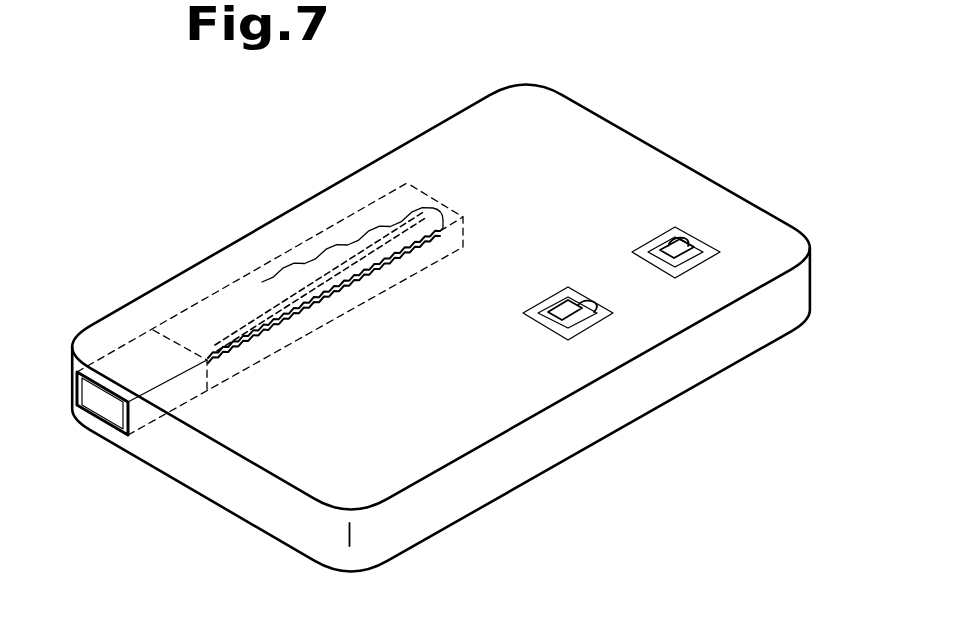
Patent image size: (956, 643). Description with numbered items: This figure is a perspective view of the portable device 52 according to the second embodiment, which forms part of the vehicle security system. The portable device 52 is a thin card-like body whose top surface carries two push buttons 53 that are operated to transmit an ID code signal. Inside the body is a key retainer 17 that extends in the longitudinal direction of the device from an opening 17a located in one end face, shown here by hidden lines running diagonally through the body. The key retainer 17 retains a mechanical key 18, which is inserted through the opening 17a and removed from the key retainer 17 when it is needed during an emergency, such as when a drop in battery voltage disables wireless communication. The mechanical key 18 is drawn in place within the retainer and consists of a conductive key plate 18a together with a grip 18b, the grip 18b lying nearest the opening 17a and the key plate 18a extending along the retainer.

The portable device 52 is at (656, 84).
The push buttons 53 is at (640, 243).
The key retainer 17 is at (317, 240).
The opening 17a is at (100, 421).
The mechanical key 18 is at (306, 333).
The conductive key plate 18a is at (313, 310).
The grip 18b is at (358, 388).